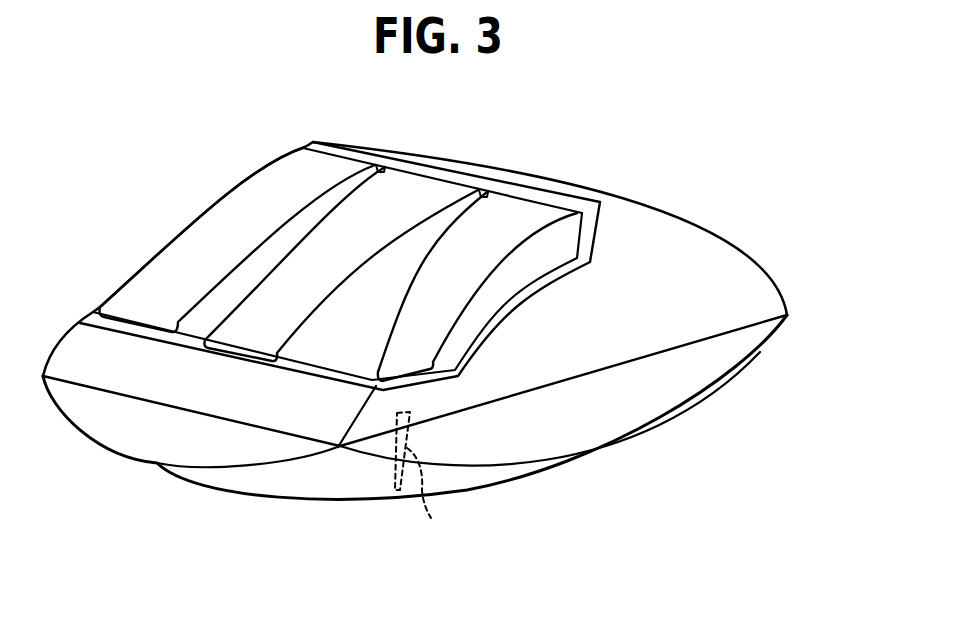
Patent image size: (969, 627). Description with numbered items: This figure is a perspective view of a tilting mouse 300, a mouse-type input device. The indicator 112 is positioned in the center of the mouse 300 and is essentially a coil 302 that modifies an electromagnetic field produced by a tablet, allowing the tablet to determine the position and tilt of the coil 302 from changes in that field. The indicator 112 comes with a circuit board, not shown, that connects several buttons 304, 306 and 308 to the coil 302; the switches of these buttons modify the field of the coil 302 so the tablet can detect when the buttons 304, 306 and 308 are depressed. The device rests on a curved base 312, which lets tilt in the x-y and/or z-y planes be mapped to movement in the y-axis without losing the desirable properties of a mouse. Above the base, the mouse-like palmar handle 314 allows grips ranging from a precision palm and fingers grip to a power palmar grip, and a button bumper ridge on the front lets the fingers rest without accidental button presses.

The tilting mouse 300 is at (661, 480).
The coil 302 is at (438, 473).
The button 304 is at (188, 211).
The button 306 is at (396, 188).
The button 308 is at (518, 208).
The curved base 312 is at (186, 482).
The mouse-like palmar handle 314 is at (759, 259).
The indicator 112 is at (341, 477).